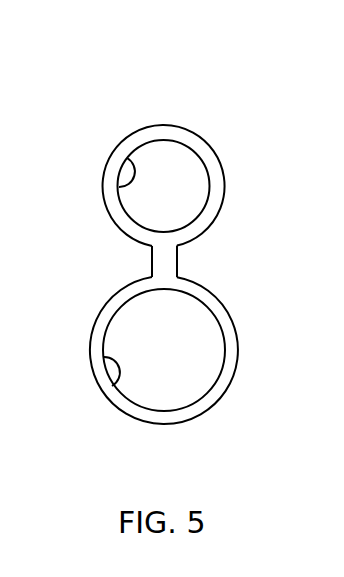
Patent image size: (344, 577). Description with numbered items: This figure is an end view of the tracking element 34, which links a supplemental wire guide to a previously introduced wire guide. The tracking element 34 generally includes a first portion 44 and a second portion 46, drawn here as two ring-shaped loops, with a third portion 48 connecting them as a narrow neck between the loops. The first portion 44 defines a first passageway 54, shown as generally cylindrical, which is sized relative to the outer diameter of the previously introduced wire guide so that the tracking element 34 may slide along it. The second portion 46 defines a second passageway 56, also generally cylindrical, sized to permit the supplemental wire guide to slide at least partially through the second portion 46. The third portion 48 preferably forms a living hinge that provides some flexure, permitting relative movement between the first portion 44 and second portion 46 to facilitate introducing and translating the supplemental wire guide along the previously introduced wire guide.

The tracking element 34 is at (163, 125).
The second portion 46 is at (193, 140).
The third portion 48 is at (170, 263).
The first portion 44 is at (178, 417).
The second passageway 56 is at (124, 159).
The first passageway 54 is at (110, 381).